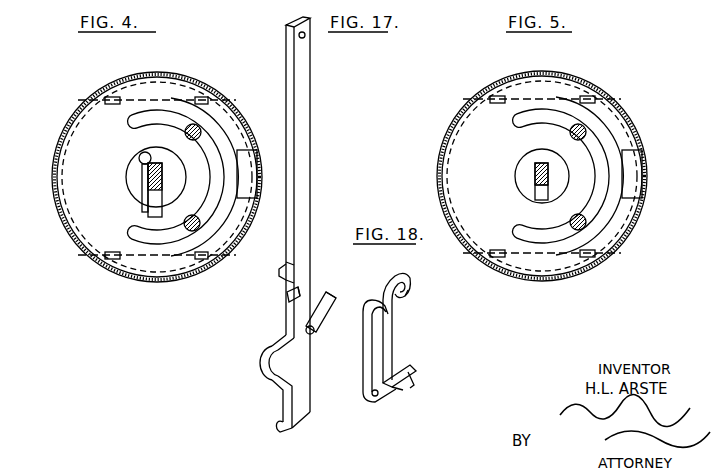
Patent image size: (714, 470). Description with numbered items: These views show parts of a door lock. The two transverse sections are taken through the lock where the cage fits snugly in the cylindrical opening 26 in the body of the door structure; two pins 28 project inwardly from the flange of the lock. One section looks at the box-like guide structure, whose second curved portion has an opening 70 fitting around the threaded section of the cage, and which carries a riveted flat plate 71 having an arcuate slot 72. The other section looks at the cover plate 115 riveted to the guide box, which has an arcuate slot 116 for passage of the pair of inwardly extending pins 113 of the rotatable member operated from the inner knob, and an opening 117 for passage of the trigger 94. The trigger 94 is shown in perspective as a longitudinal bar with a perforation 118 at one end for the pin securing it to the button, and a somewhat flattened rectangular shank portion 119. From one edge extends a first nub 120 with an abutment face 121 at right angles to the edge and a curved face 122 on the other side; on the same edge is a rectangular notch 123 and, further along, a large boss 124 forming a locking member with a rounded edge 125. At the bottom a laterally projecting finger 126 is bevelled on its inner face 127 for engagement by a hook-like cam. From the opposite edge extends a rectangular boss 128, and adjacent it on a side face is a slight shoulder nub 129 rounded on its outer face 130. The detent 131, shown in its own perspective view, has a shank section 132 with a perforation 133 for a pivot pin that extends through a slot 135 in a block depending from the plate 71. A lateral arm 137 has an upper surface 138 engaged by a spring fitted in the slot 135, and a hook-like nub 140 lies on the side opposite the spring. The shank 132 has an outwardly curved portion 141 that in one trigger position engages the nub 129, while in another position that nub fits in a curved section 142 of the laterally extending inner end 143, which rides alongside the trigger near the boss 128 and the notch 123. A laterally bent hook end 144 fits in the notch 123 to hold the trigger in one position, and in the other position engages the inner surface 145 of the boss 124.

In FIG. 4, the cylindrical opening 26 is at (55, 140).
In FIG. 5, the cylindrical opening 26 is at (447, 130).
In FIG. 4, the pins 28 is at (195, 130).
In FIG. 4, the opening 70 is at (248, 166).
In FIG. 5, the opening 70 is at (632, 173).
In FIG. 4, the flat plate 71 is at (72, 183).
In FIG. 4, the arcuate slot 72 is at (165, 240).
In FIG. 4, the trigger 94 is at (152, 181).
In FIG. 5, the trigger 94 is at (538, 172).
In FIG. 17, the trigger 94 is at (306, 214).
In FIG. 5, the pins 113 is at (582, 130).
In FIG. 5, the cover plate 115 is at (478, 112).
In FIG. 5, the arcuate slot 116 is at (555, 112).
In FIG. 5, the opening 117 is at (550, 186).
In FIG. 17, the perforation 118 is at (300, 39).
In FIG. 17, the rectangular shank portion 119 is at (311, 188).
In FIG. 17, the first nub 120 is at (280, 273).
In FIG. 17, the abutment face 121 is at (286, 262).
In FIG. 17, the curved face 122 is at (288, 292).
In FIG. 17, the rectangular notch 123 is at (295, 300).
In FIG. 17, the large boss 124 is at (265, 362).
In FIG. 17, the rounded edge 125 is at (278, 382).
In FIG. 17, the laterally projecting finger 126 is at (282, 430).
In FIG. 17, the bevelled inner face 127 is at (275, 422).
In FIG. 17, the rectangular boss 128 is at (322, 310).
In FIG. 17, the shoulder nub 129 is at (318, 333).
In FIG. 17, the outer face 130 is at (325, 300).
In FIG. 18, the detent 131 is at (405, 340).
In FIG. 18, the shank section 132 is at (388, 355).
In FIG. 18, the perforation 133 is at (370, 400).
In FIG. 4, the slot 135 is at (147, 170).
In FIG. 18, the lateral arm 137 is at (403, 390).
In FIG. 18, the upper surface 138 is at (418, 366).
In FIG. 18, the hook-like nub 140 is at (410, 386).
In FIG. 18, the outwardly curved portion 141 is at (395, 330).
In FIG. 18, the curved section 142 is at (410, 300).
In FIG. 18, the laterally extending inner end 143 is at (403, 276).
In FIG. 18, the hook end 144 is at (368, 318).
In FIG. 17, the inner surface 145 is at (276, 346).